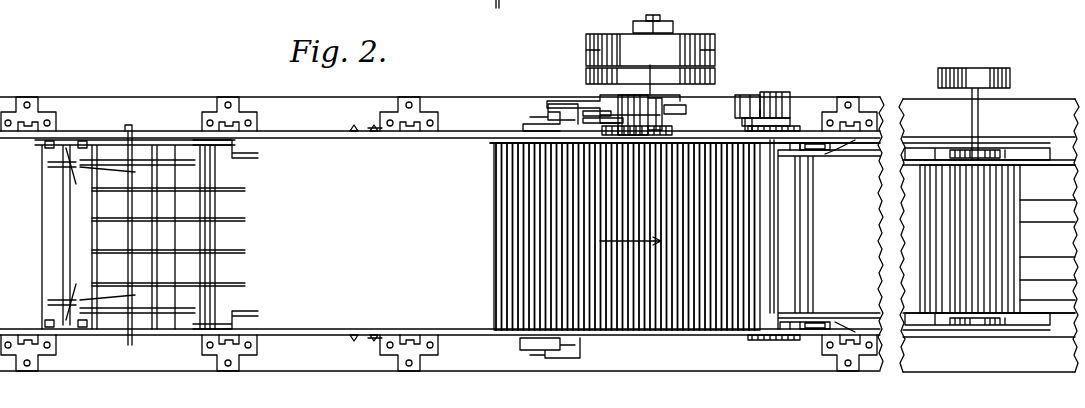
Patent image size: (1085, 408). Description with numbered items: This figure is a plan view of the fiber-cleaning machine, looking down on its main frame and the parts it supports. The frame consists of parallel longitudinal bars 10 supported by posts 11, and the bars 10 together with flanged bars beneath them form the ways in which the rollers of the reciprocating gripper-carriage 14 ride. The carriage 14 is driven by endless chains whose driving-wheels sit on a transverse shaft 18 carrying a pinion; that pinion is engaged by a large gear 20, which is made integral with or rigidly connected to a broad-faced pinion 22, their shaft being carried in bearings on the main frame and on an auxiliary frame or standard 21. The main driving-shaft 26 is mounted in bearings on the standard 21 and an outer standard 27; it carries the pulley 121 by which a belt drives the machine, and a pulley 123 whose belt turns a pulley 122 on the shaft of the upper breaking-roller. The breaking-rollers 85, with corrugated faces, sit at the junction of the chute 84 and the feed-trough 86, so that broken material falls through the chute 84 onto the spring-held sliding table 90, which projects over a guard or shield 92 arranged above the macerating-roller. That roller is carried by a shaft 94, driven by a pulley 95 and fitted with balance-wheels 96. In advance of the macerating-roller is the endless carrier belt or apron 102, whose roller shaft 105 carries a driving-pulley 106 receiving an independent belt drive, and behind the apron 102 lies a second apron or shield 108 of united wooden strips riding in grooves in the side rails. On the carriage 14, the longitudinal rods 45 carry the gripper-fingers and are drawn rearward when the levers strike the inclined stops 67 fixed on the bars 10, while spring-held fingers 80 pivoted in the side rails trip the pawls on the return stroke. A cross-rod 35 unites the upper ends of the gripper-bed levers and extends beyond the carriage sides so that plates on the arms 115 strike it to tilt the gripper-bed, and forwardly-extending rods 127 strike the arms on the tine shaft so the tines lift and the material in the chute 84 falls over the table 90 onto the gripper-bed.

The longitudinal bars 10 is at (293, 133).
The posts 11 is at (28, 125).
The reciprocating gripper-carriage 14 is at (147, 234).
The transverse shaft 18 is at (665, 118).
The large gear 20 is at (685, 140).
The auxiliary frame or standard 21 is at (582, 93).
The broad-faced pinion 22 is at (632, 89).
The driving-shaft 26 is at (656, 28).
The outer standard 27 is at (638, 20).
The cross-rod 35 is at (130, 127).
The longitudinal rods 45 is at (168, 229).
The stops 67 is at (353, 130).
The fingers 80 is at (379, 140).
The chute 84 is at (835, 187).
The breaking-rollers 85 is at (970, 238).
The feed-trough 86 is at (1047, 239).
The table 90 is at (828, 236).
The guard or shield 92 is at (766, 226).
The shaft 94 is at (778, 120).
The pulley 95 is at (790, 97).
The balance-wheels 96 is at (792, 128).
The endless carrier belt or apron 102 is at (627, 236).
The shaft 105 is at (748, 129).
The driving-pulley 106 is at (738, 107).
The second apron or shield 108 is at (497, 16).
The arm 115 is at (552, 127).
The pulley 121 is at (650, 50).
The pulley 122 is at (974, 104).
The pulley 123 is at (718, 82).
The forwardly-extending rods 127 is at (258, 156).